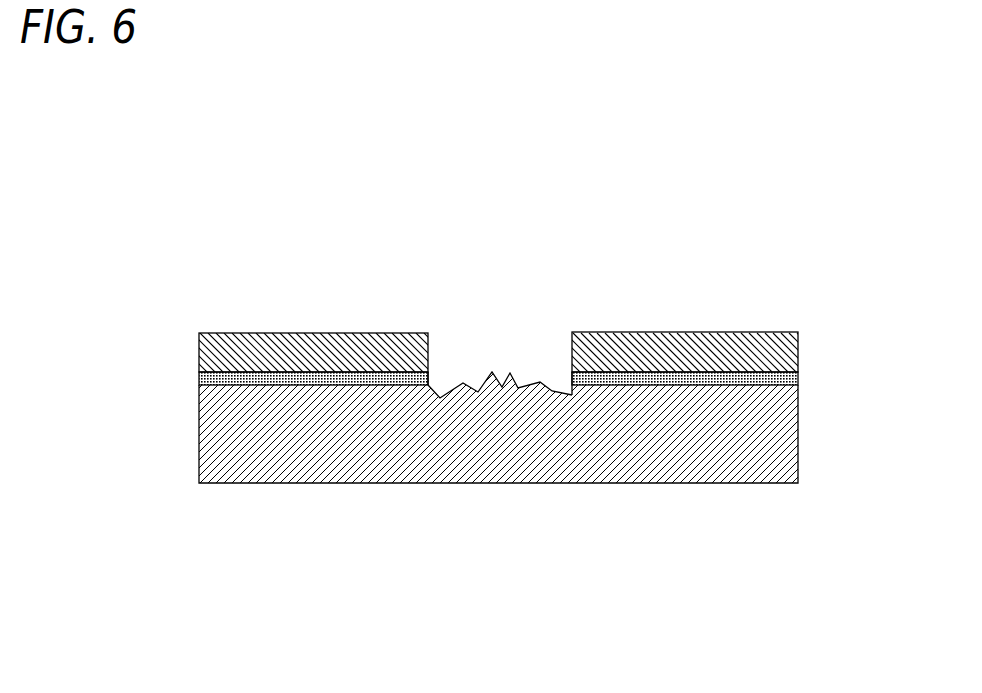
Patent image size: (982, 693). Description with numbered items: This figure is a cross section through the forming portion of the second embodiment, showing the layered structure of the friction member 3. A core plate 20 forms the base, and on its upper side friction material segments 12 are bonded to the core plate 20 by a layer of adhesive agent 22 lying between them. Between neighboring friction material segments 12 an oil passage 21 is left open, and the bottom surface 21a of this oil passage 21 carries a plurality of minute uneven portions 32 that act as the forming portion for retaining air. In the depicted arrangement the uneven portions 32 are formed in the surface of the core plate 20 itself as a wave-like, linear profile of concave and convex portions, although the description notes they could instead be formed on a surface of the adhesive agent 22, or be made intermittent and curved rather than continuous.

The semiconductor device / substrate structure 3 is at (674, 256).
The friction material segments 12 is at (292, 356).
The core plate 20 is at (275, 437).
The oil passage 21 is at (457, 367).
The bottom surface 21a is at (549, 392).
The adhesive agent 22 is at (208, 377).
The uneven portions 32 is at (510, 373).